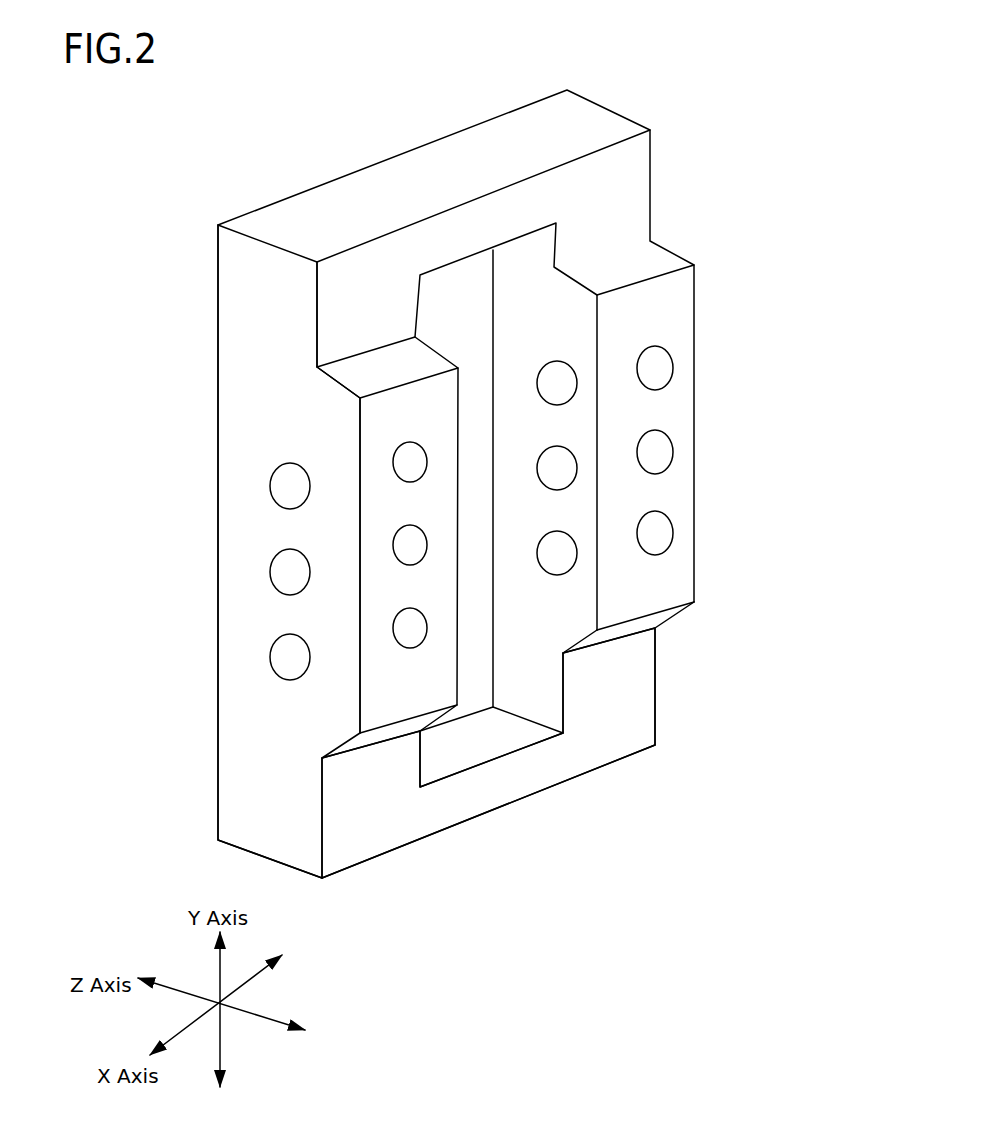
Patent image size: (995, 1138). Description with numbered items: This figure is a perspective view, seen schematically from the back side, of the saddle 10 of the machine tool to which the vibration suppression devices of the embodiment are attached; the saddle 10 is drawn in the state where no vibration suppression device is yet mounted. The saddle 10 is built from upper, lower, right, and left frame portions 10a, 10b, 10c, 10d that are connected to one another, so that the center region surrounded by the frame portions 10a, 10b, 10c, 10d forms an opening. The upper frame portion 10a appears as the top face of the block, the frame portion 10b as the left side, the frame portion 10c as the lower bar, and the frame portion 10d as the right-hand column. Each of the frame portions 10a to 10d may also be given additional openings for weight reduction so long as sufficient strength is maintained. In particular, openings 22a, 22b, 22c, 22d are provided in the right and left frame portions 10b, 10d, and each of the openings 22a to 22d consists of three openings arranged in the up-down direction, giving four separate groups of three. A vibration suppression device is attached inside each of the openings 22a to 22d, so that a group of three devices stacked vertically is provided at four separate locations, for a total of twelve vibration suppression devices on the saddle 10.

The saddle 10 is at (474, 490).
The upper frame portion 10a is at (387, 180).
The left frame portion 10b is at (260, 430).
The lower frame portion 10c is at (385, 792).
The right frame portion 10d is at (625, 663).
The openings 22a is at (292, 573).
The openings 22b is at (410, 545).
The openings 22c is at (655, 452).
The openings 22d is at (557, 470).